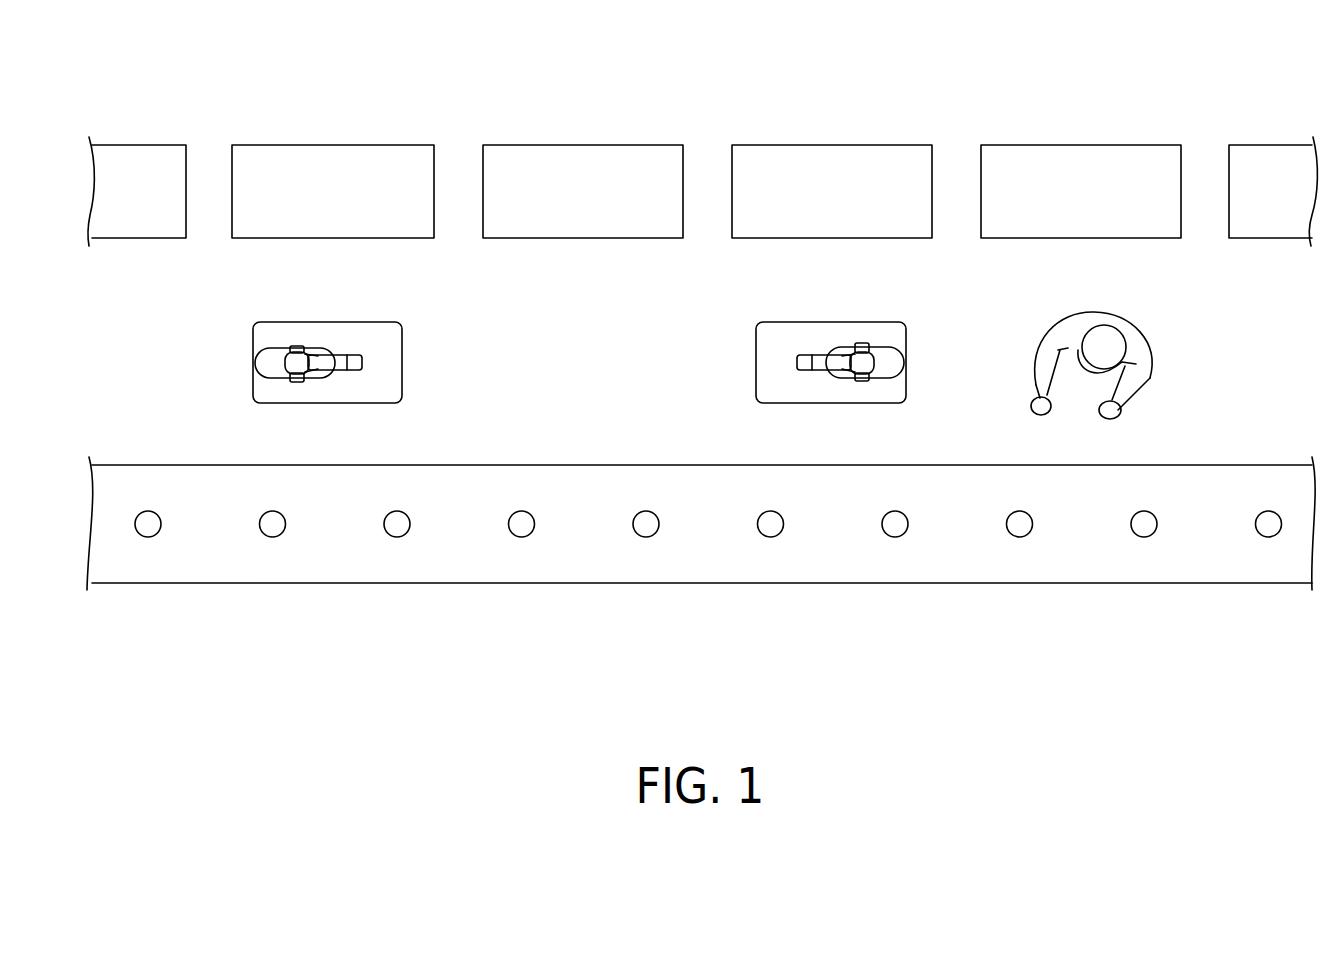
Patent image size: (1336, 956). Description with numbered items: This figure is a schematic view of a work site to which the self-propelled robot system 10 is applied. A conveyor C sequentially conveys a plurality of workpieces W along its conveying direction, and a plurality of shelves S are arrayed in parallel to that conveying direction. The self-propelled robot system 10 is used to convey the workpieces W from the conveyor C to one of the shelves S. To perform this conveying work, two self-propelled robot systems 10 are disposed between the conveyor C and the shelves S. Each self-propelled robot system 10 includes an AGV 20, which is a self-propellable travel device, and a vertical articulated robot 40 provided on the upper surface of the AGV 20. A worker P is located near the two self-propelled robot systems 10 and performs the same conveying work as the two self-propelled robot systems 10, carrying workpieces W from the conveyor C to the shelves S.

The shelves S is at (141, 168).
The self-propelled robot system 10 is at (619, 331).
The AGV (Automated Guided Vehicle) 20 is at (403, 354).
The vertical articulated robot 40 is at (337, 362).
The worker P is at (1138, 346).
The workpieces W is at (388, 535).
The conveyor C is at (1268, 567).